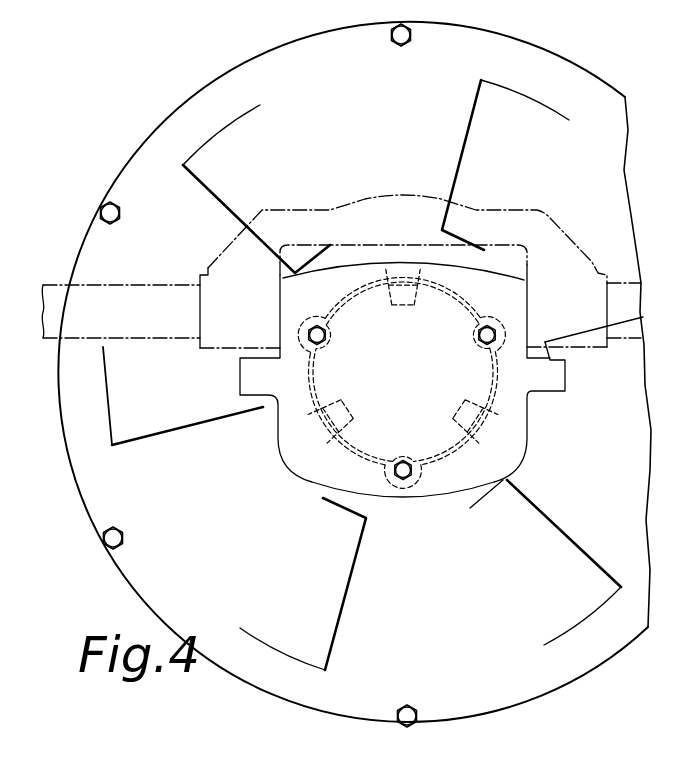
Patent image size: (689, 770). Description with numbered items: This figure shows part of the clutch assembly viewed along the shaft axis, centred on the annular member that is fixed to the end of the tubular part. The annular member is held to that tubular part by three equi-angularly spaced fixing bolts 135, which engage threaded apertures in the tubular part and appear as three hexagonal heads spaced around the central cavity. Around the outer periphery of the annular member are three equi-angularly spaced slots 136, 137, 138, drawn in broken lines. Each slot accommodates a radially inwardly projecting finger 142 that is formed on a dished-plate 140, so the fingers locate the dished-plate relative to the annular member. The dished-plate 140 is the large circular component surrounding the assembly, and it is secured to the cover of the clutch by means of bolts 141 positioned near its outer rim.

The dished-plate 140 is at (172, 112).
The bolts 141 is at (400, 47).
The fixing bolts 135 is at (408, 461).
The slot 136 is at (408, 306).
The slot 137 is at (458, 414).
The slot 138 is at (343, 408).
The finger 142 is at (337, 430).